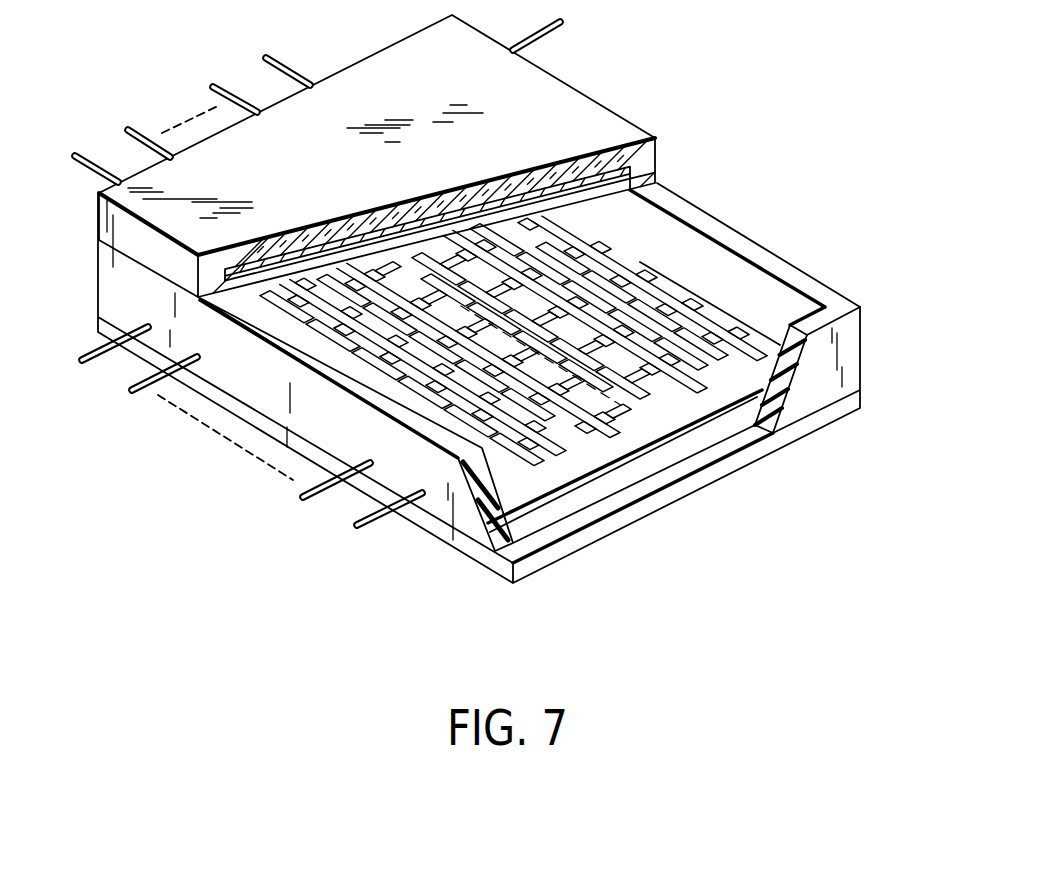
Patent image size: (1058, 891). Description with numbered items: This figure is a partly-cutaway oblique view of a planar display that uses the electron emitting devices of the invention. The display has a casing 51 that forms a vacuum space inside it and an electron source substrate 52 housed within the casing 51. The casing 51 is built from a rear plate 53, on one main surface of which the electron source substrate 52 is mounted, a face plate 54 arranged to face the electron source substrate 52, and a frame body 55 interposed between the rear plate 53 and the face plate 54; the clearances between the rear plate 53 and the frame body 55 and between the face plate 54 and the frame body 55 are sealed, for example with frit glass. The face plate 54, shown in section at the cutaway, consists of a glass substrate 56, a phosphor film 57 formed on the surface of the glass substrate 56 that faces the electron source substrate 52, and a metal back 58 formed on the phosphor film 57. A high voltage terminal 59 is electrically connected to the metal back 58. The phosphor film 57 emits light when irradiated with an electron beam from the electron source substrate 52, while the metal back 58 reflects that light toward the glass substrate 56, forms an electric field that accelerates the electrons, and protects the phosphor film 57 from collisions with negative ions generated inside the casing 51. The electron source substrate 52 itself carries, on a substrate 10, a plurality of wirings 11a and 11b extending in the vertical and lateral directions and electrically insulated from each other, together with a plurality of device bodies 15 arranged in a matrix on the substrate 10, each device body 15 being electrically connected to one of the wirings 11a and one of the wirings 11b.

The substrate 10 is at (528, 497).
The wiring 11a is at (590, 424).
The wiring 11b is at (625, 426).
The device body 15 is at (572, 420).
The casing 51 is at (797, 78).
The electron source substrate 52 is at (817, 526).
The rear plate 53 is at (855, 400).
The face plate 54 is at (746, 67).
The frame body 55 is at (747, 247).
The glass substrate 56 is at (642, 146).
The phosphor film 57 is at (635, 170).
The metal back 58 is at (655, 181).
The high voltage terminal 59 is at (538, 43).